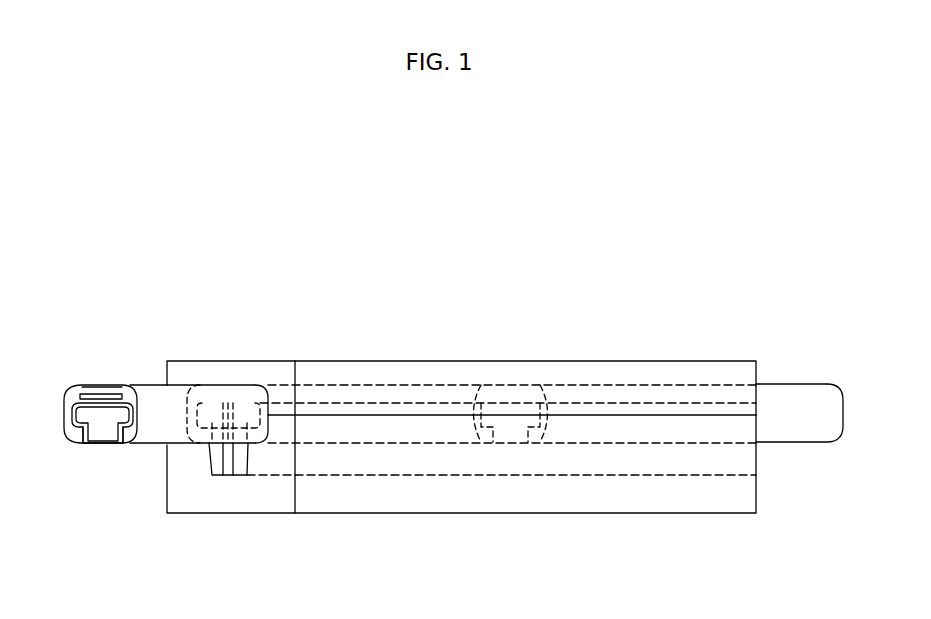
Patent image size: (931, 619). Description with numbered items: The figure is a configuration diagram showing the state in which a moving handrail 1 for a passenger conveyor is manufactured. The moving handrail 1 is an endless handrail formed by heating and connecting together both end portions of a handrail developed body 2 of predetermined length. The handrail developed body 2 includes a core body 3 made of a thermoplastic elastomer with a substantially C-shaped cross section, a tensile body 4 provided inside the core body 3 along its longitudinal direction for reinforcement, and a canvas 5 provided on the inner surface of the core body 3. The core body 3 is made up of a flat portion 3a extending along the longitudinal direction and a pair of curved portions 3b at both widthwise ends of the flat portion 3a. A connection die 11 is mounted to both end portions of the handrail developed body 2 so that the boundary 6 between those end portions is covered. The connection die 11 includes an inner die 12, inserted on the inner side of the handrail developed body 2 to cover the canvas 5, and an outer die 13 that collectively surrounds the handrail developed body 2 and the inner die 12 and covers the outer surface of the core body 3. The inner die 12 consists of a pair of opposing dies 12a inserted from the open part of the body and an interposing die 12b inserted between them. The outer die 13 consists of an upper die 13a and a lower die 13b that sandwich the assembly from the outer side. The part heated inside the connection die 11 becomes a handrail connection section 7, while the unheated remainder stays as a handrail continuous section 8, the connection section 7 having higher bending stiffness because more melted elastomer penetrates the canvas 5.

The moving handrail 1 is at (441, 430).
The handrail developed body 2 is at (486, 411).
The core body 3 is at (79, 414).
The flat portion 3a is at (95, 388).
The curved portions 3b is at (78, 433).
The tensile body 4 is at (108, 394).
The canvas 5 is at (68, 417).
The boundary 6 is at (545, 418).
The handrail connection section 7 is at (587, 383).
The handrail continuous section 8 is at (182, 380).
The connection die 11 is at (461, 436).
The inner die 12 is at (244, 427).
The opposing dies 12a is at (213, 390).
The interposing die 12b is at (233, 390).
The outer die 13 is at (461, 442).
The upper die 13a is at (413, 372).
The lower die 13b is at (445, 500).